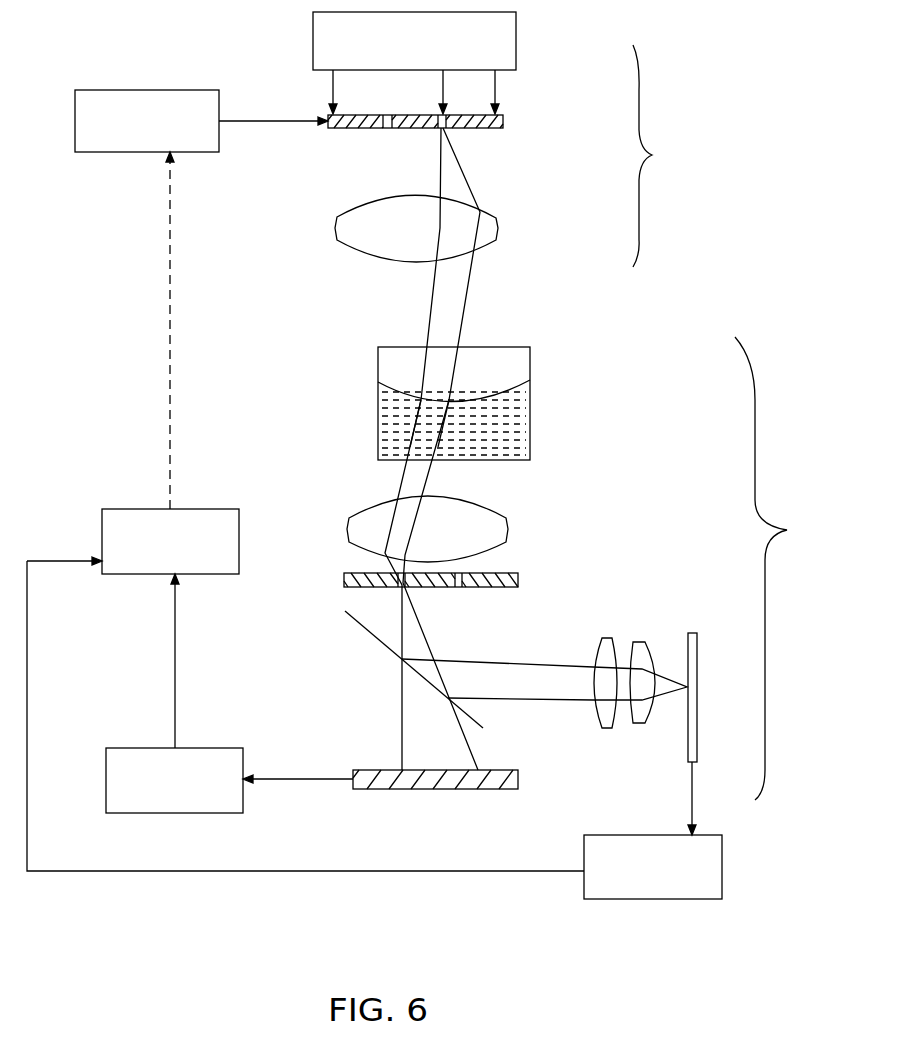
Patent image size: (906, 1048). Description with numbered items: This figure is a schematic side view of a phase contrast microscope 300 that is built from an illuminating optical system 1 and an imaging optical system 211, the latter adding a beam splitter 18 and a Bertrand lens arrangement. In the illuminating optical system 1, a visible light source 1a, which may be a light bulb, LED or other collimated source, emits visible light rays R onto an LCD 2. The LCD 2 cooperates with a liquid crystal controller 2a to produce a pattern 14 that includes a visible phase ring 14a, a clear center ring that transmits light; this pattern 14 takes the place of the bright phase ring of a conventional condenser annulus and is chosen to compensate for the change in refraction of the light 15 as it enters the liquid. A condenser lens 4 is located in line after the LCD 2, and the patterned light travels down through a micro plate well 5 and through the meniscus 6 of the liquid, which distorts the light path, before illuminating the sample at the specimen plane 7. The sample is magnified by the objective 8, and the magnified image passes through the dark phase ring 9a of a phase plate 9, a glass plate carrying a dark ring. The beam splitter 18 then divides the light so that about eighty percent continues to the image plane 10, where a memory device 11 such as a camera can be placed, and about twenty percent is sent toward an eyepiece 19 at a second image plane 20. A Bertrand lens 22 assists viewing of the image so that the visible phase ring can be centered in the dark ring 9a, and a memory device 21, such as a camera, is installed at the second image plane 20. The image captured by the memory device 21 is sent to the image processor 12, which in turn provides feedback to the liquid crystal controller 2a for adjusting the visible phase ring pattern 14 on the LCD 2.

The visible light source 1a is at (312, 48).
The visible light rays R is at (330, 95).
The LCD 2 is at (503, 121).
The visible phase ring 14a is at (388, 130).
The pattern 14 is at (400, 150).
The illuminating optical system 1 is at (653, 156).
The liquid crystal controller 2a is at (143, 150).
The phase contrast microscope 300 is at (78, 335).
The condenser lens 4 is at (360, 224).
The micro plate well 5 is at (530, 420).
The meniscus 6 is at (507, 392).
The specimen plane 7 is at (445, 460).
The change in refraction of the light 15 is at (405, 428).
The image processor 12 is at (118, 530).
The objective 8 is at (365, 532).
The phase plate 9 is at (518, 582).
The dark phase ring 9a is at (458, 590).
The beam splitter 18 is at (373, 636).
The Bertrand lens 22 is at (608, 722).
The eyepiece 19 is at (641, 657).
The second image plane 20 is at (693, 718).
The image plane 10 is at (483, 783).
The memory device 11 is at (125, 785).
The memory device 21 is at (597, 890).
The imaging optical system 211 is at (782, 568).